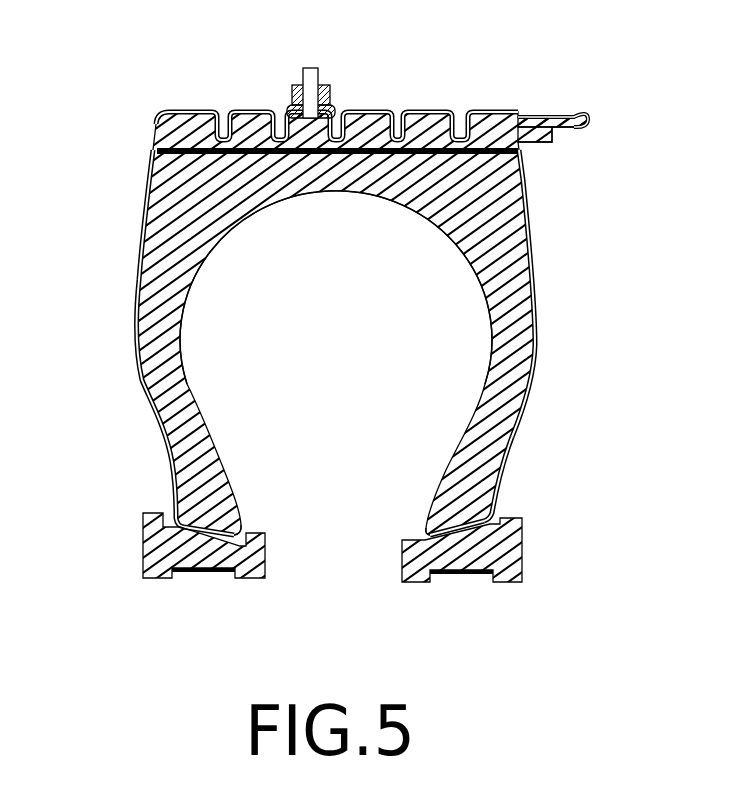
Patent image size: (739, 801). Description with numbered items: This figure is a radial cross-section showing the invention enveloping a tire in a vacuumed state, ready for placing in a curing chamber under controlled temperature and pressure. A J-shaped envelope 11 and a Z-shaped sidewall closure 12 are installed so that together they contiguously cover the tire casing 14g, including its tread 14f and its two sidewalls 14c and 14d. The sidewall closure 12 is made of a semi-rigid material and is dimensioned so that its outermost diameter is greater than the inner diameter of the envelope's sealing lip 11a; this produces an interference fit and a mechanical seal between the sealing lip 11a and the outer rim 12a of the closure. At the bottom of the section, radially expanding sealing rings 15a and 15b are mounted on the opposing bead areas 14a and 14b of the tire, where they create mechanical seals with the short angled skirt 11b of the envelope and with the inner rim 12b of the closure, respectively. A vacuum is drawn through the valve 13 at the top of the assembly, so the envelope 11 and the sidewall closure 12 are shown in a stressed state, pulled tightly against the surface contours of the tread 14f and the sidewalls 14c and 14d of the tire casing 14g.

The J-shaped envelope 11 is at (153, 206).
The sealing lip 11a is at (525, 118).
The short angled skirt 11b is at (243, 547).
The Z-shaped sidewall closure 12 is at (532, 243).
The outer rim 12a is at (523, 142).
The inner rim 12b is at (452, 545).
The valve 13 is at (303, 72).
The bead area 14a is at (237, 540).
The bead area 14b is at (450, 523).
The sidewall 14c is at (141, 352).
The sidewall 14d is at (511, 358).
The tread 14f is at (495, 140).
The tire casing 14g is at (199, 229).
The sealing ring 15a is at (150, 513).
The sealing ring 15b is at (514, 518).